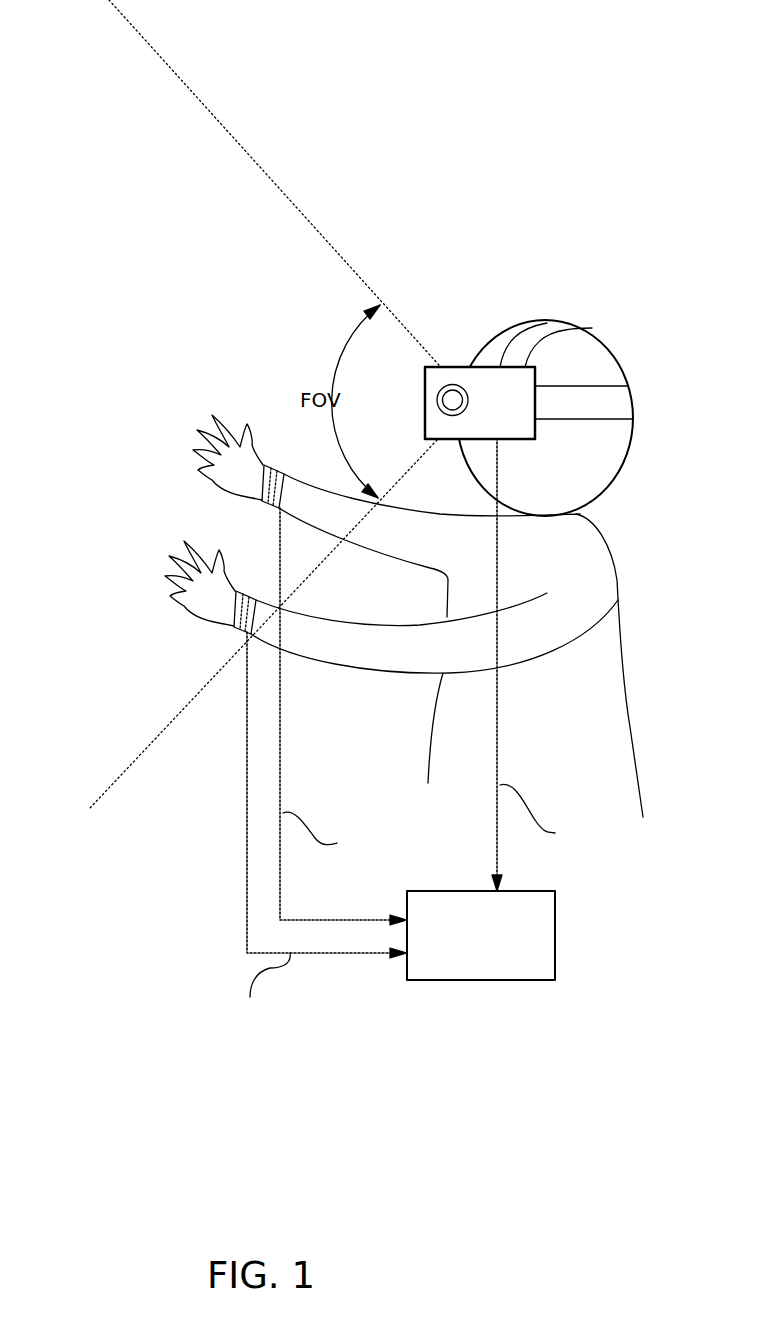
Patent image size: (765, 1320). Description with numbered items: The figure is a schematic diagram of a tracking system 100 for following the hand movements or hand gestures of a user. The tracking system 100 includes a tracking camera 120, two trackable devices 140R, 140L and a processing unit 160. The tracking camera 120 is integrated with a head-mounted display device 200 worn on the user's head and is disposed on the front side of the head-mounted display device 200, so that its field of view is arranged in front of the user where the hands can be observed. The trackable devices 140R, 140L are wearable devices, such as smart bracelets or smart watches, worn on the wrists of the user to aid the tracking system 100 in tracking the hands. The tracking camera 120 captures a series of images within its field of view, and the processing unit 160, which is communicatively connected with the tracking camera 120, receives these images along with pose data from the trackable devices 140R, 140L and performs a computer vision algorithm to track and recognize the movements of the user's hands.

The tracking system 100 is at (510, 90).
The tracking camera 120 is at (452, 386).
The head-mounted display device 200 is at (580, 331).
The trackable device 140R is at (264, 503).
The trackable device 140L is at (234, 630).
The processing unit 160 is at (495, 982).